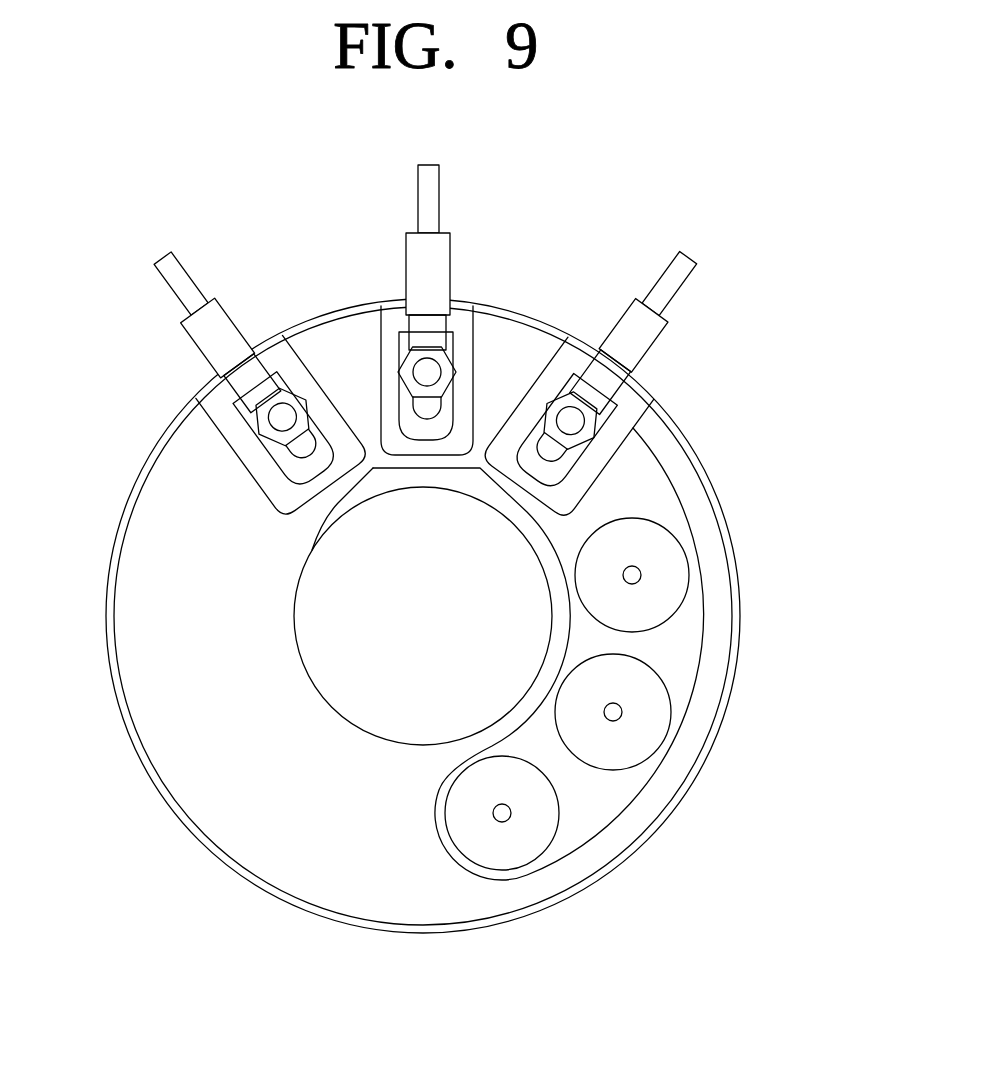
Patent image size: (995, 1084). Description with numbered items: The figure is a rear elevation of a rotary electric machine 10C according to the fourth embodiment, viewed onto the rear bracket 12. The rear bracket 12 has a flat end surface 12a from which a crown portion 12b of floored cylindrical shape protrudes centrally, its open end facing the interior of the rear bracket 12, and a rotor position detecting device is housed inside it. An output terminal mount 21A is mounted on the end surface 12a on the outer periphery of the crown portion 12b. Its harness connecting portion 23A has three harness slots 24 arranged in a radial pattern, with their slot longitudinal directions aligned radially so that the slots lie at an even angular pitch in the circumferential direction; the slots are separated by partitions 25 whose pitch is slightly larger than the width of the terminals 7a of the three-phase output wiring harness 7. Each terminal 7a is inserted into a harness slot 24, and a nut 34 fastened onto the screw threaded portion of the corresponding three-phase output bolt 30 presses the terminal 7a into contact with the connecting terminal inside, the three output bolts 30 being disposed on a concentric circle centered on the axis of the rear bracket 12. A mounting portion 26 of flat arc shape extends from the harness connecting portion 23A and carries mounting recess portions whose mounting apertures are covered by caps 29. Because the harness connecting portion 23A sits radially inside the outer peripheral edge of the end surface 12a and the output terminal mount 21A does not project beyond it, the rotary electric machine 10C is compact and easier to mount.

The rotary electric machine 10C is at (111, 187).
The three-phase output wiring harness 7 is at (168, 252).
The terminals 7a is at (292, 392).
The harness slots 24 is at (242, 396).
The nuts 34 is at (228, 415).
The three-phase output bolts 30 is at (275, 430).
The partitions 25 is at (332, 340).
The harness connecting portion 23A is at (652, 423).
The mounting portion 26 is at (695, 519).
The caps 29 is at (643, 713).
The output terminal mount 21A is at (706, 600).
The rear bracket 12 is at (360, 892).
The end surface 12a is at (165, 748).
The crown portion 12b is at (365, 678).